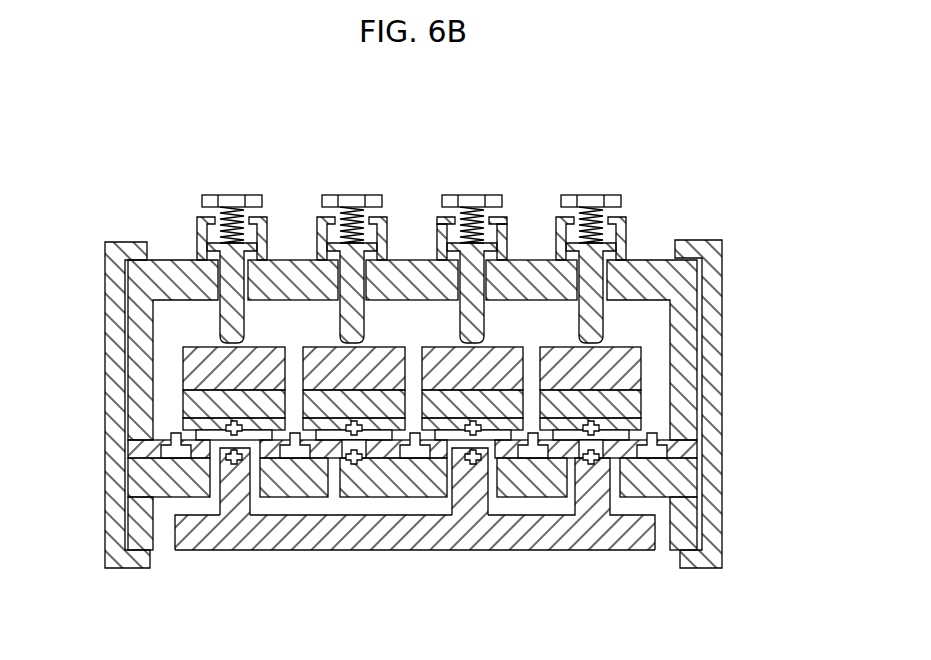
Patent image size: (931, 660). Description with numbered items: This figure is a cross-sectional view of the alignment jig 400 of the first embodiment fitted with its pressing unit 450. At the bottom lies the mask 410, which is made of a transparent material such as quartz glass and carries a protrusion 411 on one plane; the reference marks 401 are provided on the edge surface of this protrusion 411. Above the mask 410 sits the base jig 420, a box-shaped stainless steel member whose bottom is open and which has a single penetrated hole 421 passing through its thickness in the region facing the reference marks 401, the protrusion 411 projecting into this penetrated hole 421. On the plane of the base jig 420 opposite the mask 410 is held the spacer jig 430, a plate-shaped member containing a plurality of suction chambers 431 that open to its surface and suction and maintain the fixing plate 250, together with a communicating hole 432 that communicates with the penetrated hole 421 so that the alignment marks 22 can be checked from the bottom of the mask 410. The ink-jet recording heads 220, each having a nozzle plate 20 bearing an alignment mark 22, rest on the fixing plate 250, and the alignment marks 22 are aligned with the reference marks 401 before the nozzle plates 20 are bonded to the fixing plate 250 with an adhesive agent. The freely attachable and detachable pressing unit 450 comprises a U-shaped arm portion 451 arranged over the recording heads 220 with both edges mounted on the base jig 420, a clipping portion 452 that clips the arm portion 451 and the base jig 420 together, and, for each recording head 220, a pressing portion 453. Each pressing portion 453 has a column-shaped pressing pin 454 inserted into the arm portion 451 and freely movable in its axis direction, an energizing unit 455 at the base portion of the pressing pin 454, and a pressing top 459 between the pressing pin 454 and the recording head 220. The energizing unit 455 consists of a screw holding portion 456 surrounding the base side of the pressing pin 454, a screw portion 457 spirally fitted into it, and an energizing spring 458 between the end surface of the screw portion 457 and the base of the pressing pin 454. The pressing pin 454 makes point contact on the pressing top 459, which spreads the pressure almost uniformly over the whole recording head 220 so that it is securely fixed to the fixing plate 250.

The alignment jig 400 is at (702, 138).
The pressing unit 450 is at (723, 243).
The arm portion 451 is at (162, 268).
The clipping portion 452 is at (107, 268).
The pressing portion 453 is at (579, 102).
The pressing pin 454 is at (509, 216).
The energizing unit 455 is at (483, 185).
The screw holding portion 456 is at (439, 214).
The screw portion 457 is at (459, 199).
The energizing spring 458 is at (457, 234).
The pressing top 459 is at (620, 363).
The reference mark 401 is at (620, 412).
The nozzle plate 20 is at (186, 428).
The alignment mark 22 is at (345, 418).
The ink-jet recording head 220 is at (295, 380).
The fixing plate 250 is at (178, 437).
The spacer jig 430 is at (684, 448).
The suction chamber 431 is at (160, 440).
The communicating hole 432 is at (225, 460).
The base jig 420 is at (690, 490).
The penetrated hole 421 is at (452, 550).
The mask 410 is at (597, 540).
The protrusion 411 is at (557, 550).